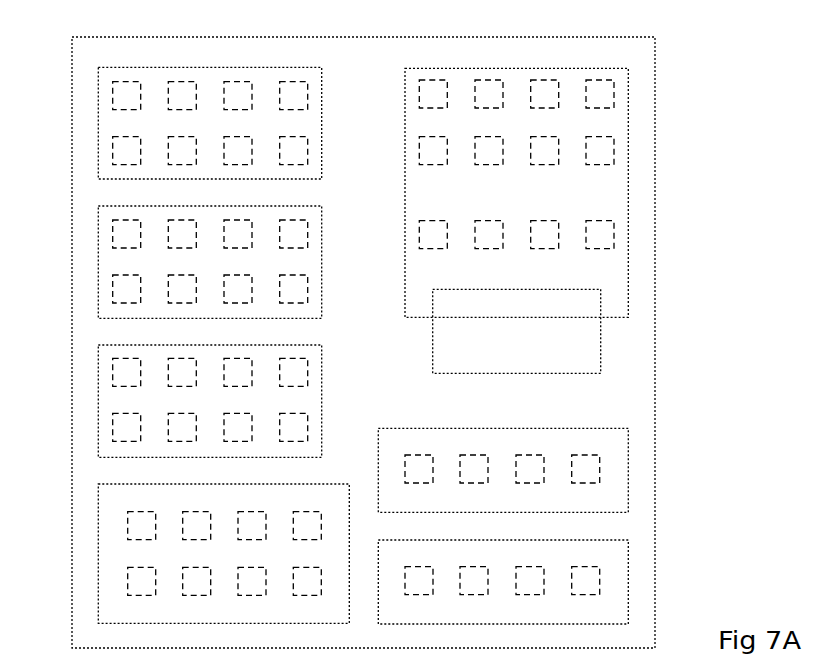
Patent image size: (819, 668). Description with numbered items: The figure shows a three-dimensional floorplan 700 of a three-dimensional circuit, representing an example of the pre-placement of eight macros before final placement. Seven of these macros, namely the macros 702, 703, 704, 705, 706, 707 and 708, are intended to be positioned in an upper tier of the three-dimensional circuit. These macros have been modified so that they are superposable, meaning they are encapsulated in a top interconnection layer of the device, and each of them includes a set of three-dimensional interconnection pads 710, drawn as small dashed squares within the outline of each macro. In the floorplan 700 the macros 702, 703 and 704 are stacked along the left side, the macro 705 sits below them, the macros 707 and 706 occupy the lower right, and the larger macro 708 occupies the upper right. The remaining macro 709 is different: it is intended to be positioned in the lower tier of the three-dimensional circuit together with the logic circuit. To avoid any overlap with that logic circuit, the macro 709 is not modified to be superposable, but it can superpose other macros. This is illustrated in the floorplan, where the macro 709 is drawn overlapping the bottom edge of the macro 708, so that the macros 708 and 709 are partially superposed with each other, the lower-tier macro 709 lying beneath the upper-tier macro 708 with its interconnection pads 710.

The 3D floorplan 700 is at (643, 64).
The macro 702 is at (307, 121).
The macro 703 is at (313, 258).
The macro 704 is at (313, 402).
The macro 705 is at (330, 488).
The macro 706 is at (557, 554).
The macro 707 is at (568, 438).
The macro 708 is at (418, 188).
The macro 709 is at (464, 361).
The 3D interconnection pads 710 is at (236, 93).